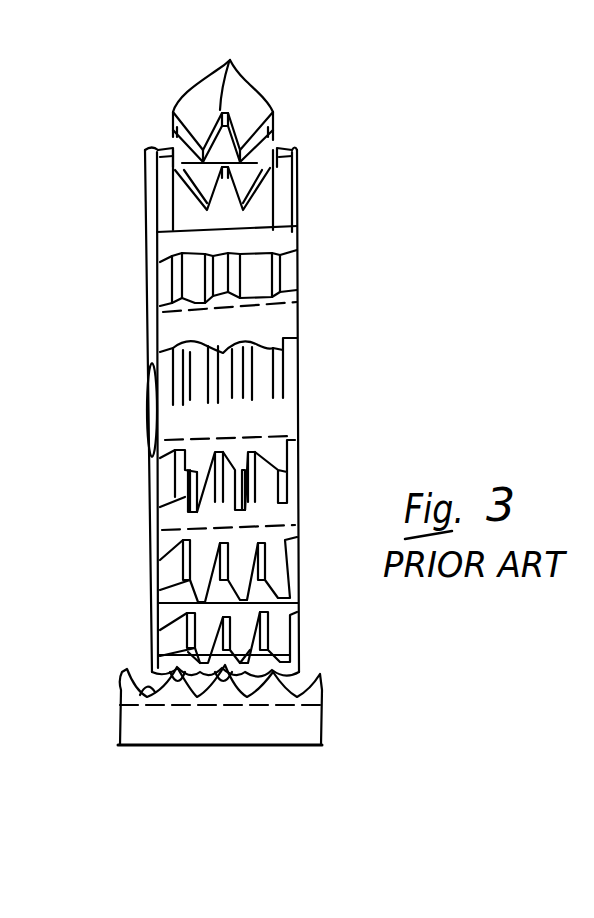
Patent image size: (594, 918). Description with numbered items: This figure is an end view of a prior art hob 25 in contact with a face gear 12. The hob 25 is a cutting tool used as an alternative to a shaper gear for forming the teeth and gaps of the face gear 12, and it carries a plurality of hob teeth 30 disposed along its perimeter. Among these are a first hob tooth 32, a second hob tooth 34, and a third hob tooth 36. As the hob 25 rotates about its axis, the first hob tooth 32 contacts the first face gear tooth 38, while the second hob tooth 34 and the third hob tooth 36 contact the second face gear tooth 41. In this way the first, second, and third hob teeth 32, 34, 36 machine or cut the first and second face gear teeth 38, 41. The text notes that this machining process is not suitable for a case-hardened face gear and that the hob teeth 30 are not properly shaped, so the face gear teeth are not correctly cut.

The face gear 12 is at (122, 730).
The hob 25 is at (302, 377).
The hob teeth 30 is at (230, 64).
The first hob tooth 32 is at (152, 677).
The second hob tooth 34 is at (193, 659).
The third hob tooth 36 is at (252, 642).
The first face gear tooth 38 is at (178, 668).
The second face gear tooth 41 is at (223, 670).